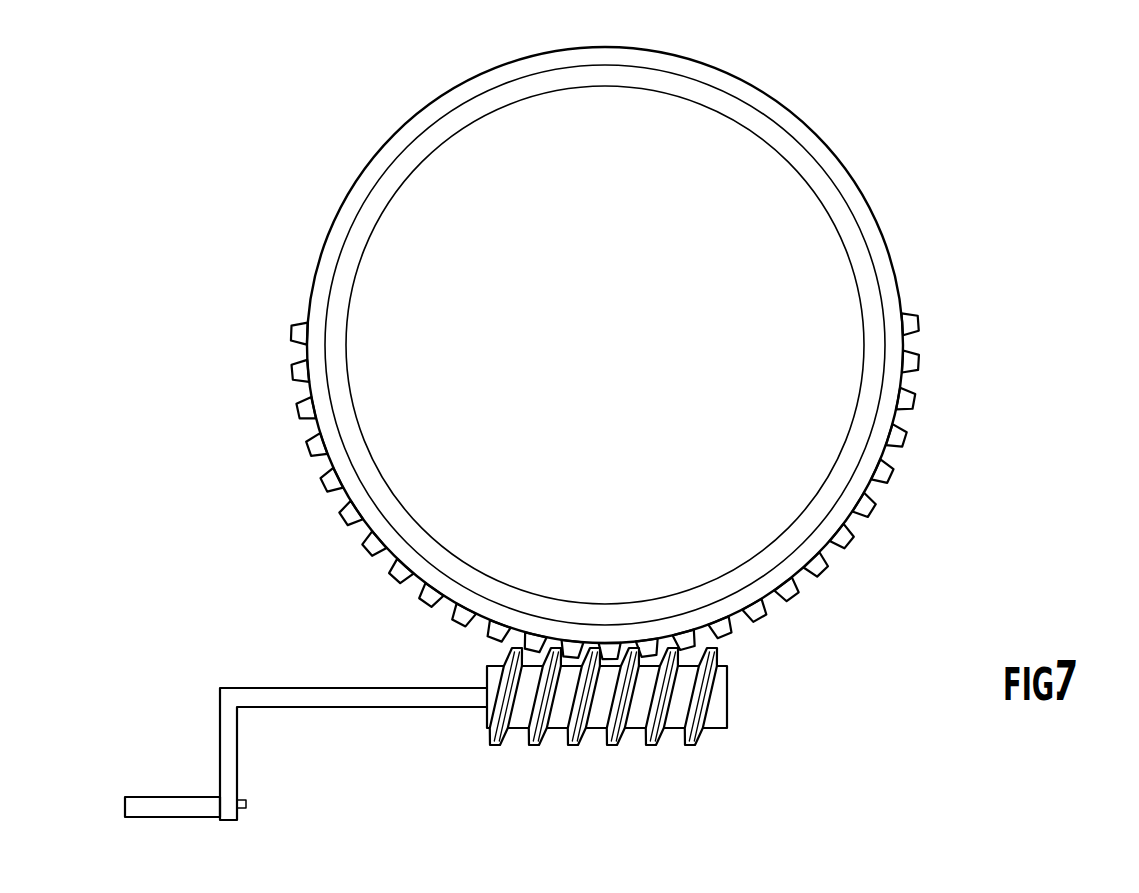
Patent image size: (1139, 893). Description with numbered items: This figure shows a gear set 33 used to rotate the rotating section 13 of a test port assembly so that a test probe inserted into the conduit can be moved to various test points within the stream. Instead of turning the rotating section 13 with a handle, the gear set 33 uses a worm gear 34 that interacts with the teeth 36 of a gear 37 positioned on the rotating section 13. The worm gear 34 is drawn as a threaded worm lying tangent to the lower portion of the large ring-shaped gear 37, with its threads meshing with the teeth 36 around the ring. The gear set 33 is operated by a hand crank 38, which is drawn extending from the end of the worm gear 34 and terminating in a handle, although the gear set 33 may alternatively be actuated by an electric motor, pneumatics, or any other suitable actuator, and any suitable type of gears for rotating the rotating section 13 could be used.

The rotating section 13 is at (868, 415).
The gear set 33 is at (705, 353).
The worm gear 34 is at (718, 698).
The teeth 36 is at (598, 689).
The gear 37 is at (908, 472).
The hand crank 38 is at (181, 795).